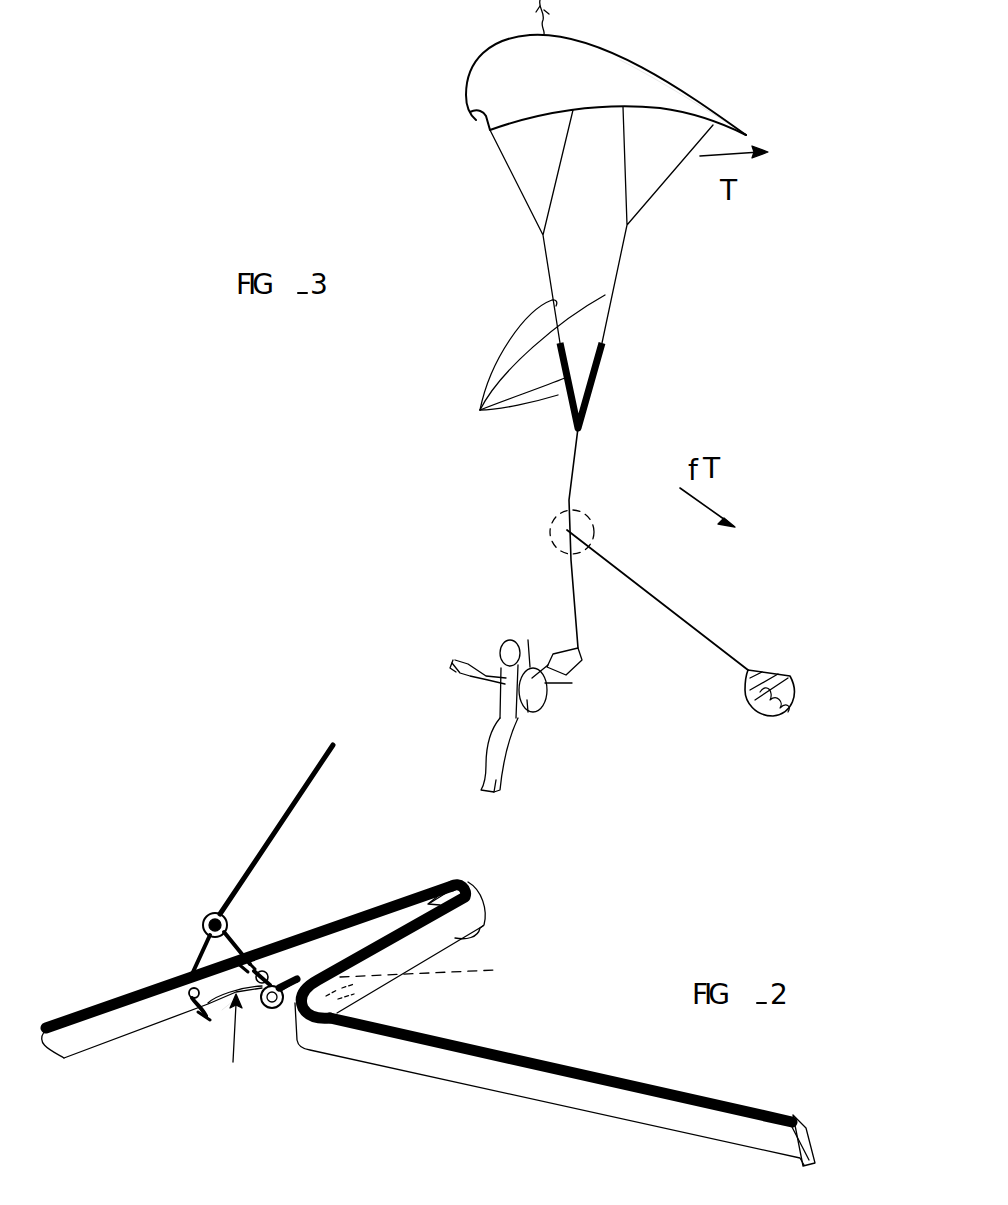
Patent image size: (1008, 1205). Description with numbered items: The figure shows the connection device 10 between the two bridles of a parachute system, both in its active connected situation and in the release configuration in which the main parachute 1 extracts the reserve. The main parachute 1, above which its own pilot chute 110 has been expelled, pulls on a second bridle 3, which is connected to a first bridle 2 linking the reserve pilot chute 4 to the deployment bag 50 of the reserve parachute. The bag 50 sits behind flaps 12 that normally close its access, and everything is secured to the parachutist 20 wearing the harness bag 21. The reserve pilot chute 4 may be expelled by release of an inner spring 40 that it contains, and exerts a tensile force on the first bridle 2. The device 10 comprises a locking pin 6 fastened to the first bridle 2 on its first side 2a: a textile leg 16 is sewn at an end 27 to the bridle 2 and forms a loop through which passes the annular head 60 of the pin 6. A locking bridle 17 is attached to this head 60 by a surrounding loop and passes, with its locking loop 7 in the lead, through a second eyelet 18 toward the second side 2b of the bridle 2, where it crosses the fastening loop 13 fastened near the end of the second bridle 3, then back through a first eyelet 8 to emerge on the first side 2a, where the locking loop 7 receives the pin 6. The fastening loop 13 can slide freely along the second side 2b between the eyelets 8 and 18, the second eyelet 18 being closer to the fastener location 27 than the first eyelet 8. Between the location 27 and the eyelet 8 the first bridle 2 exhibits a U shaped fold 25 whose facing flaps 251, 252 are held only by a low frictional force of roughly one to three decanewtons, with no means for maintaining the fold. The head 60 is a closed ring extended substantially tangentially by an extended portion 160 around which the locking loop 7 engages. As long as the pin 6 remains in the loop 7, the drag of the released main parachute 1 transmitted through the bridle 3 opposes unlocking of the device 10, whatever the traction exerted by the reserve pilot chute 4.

In FIG. 3, the main parachute 1 is at (468, 117).
In FIG. 3, the pilot chute of the main parachute 110 is at (596, 0).
In FIG. 3, the first bridle 2 is at (672, 610).
In FIG. 2, the first bridle 2 is at (547, 1078).
In FIG. 2, the first side of the first bridle 2a is at (433, 1066).
In FIG. 2, the second side of the first bridle 2b is at (78, 1016).
In FIG. 3, the second bridle 3 is at (576, 470).
In FIG. 2, the second bridle 3 is at (291, 804).
In FIG. 3, the reserve pilot chute 4 is at (764, 687).
In FIG. 3, the inner spring 40 is at (754, 699).
In FIG. 2, the locking pin 6 is at (239, 1050).
In FIG. 2, the locking loop 7 is at (203, 1016).
In FIG. 2, the first eyelet 8 is at (188, 1005).
In FIG. 3, the device 10 is at (562, 522).
In FIG. 2, the device 10 is at (159, 954).
In FIG. 3, the flaps 12 is at (525, 640).
In FIG. 3, the fastening loop 13 is at (521, 370).
In FIG. 2, the fastening loop 13 is at (212, 913).
In FIG. 2, the textile leg 16 is at (287, 1012).
In FIG. 2, the extended portion 160 is at (226, 1012).
In FIG. 2, the locking bridle 17 is at (240, 962).
In FIG. 2, the second eyelet 18 is at (284, 975).
In FIG. 3, the parachutist 20 is at (503, 690).
In FIG. 3, the harness bag 21 is at (528, 712).
In FIG. 2, the U shaped fold 25 is at (480, 916).
In FIG. 2, the facing flap of the fold 251 is at (387, 923).
In FIG. 2, the facing flap of the fold 252 is at (466, 944).
In FIG. 2, the end of the textile leg 27 is at (435, 973).
In FIG. 3, the deployment bag of the reserve parachute 50 is at (580, 668).
In FIG. 2, the annular head 60 is at (272, 1010).